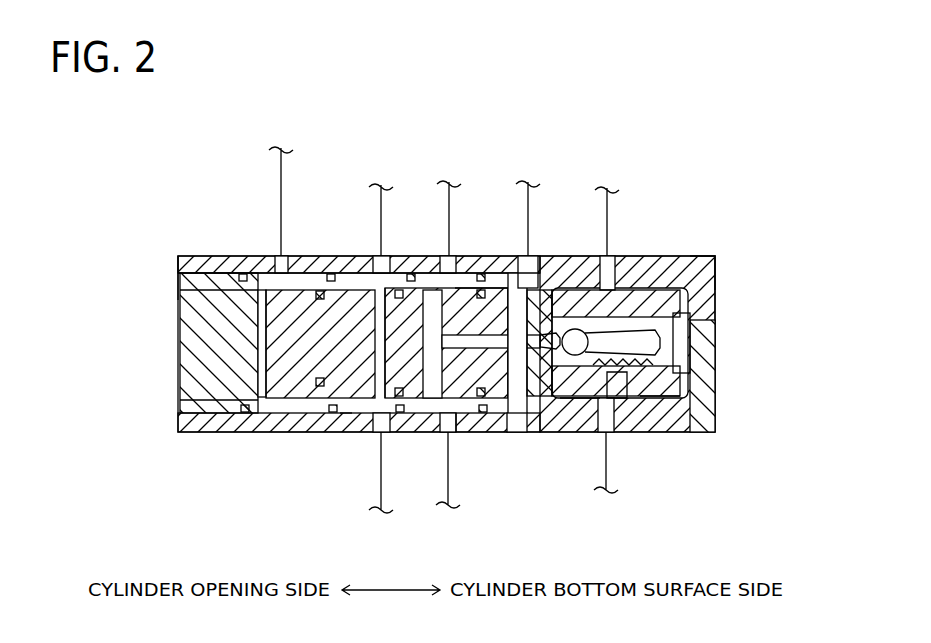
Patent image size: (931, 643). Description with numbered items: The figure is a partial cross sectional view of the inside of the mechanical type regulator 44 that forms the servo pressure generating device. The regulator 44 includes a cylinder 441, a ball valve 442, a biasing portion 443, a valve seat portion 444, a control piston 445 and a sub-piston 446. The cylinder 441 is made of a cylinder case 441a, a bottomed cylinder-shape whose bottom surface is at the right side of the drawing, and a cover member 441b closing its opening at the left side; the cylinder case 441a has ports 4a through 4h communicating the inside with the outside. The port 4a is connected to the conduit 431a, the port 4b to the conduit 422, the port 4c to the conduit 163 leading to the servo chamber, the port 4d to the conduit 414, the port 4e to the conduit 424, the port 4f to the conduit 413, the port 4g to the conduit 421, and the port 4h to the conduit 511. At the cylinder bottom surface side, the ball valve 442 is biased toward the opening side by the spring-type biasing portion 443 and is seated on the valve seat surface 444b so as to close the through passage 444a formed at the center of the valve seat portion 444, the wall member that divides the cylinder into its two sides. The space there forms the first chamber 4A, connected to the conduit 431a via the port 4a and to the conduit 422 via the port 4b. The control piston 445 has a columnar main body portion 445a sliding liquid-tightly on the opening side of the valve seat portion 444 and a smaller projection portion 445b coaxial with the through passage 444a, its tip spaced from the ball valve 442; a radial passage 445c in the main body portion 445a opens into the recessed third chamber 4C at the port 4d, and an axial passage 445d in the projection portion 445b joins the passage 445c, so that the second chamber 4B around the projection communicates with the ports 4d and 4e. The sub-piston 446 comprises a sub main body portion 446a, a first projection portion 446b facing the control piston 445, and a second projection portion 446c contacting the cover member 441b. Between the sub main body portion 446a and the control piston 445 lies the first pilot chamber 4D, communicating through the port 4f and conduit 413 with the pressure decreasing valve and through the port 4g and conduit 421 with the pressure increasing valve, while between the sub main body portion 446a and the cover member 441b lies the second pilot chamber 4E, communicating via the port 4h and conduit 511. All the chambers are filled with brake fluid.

The regulator 44 is at (745, 384).
The cylinder 441 is at (727, 280).
The cylinder case 441a is at (690, 257).
The cover member 441b is at (190, 300).
The ball valve 442 is at (600, 405).
The biasing portion 443 is at (680, 392).
The valve seat portion 444 is at (566, 257).
The through passage 444a is at (573, 433).
The valve seat surface 444b is at (688, 432).
The control piston 445 is at (383, 433).
The main body portion 445a is at (375, 432).
The projection portion 445b is at (543, 433).
The passage 445c is at (432, 433).
The passage 445d is at (482, 400).
The sub-piston 446 is at (262, 550).
The sub main body portion 446a is at (300, 335).
The first projection portion 446b is at (325, 372).
The second projection portion 446c is at (240, 355).
The first chamber 4A is at (665, 327).
The second chamber 4B is at (544, 257).
The third chamber 4C is at (468, 257).
The first pilot chamber 4D is at (325, 257).
The second pilot chamber 4E is at (235, 257).
The port 4a is at (616, 257).
The port 4b is at (615, 435).
The port 4c is at (512, 257).
The port 4d is at (433, 257).
The port 4e is at (457, 433).
The port 4f is at (369, 257).
The port 4g is at (346, 433).
The port 4h is at (276, 257).
The conduit 163 is at (528, 205).
The conduit 413 is at (381, 205).
The conduit 414 is at (449, 205).
The conduit 421 is at (381, 495).
The conduit 422 is at (606, 488).
The conduit 424 is at (448, 495).
The conduit 431a is at (607, 220).
The conduit 511 is at (281, 178).